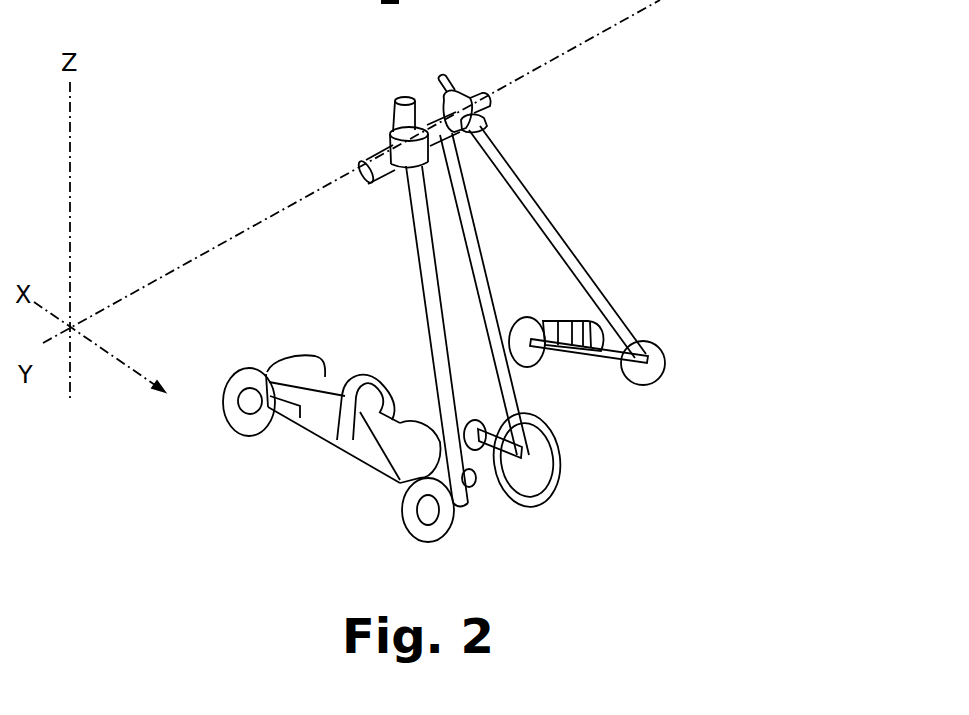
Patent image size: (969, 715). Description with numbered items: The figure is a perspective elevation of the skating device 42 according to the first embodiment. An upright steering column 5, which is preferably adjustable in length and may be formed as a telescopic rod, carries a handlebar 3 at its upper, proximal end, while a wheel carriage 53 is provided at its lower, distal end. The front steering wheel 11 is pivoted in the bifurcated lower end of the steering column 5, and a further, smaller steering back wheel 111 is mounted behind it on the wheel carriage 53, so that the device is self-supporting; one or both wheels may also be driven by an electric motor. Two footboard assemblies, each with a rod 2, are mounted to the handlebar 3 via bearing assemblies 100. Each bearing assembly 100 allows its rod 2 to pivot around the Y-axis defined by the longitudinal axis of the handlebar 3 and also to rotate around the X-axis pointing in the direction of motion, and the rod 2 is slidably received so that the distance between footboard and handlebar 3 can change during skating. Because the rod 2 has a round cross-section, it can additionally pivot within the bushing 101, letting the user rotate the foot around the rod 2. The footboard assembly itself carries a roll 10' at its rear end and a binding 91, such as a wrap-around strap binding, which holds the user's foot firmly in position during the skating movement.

The handlebar 3 is at (375, 165).
The bearing assembly 100 is at (468, 115).
The bushing 101 is at (479, 120).
The steering column 5 is at (485, 263).
The rod 2 is at (585, 262).
The skating device 42 is at (773, 84).
The back wheel 111 is at (470, 430).
The front steering wheel 11 is at (560, 470).
The wheel carriage 53 is at (685, 412).
The roll 10' is at (312, 448).
The binding 91 is at (350, 430).